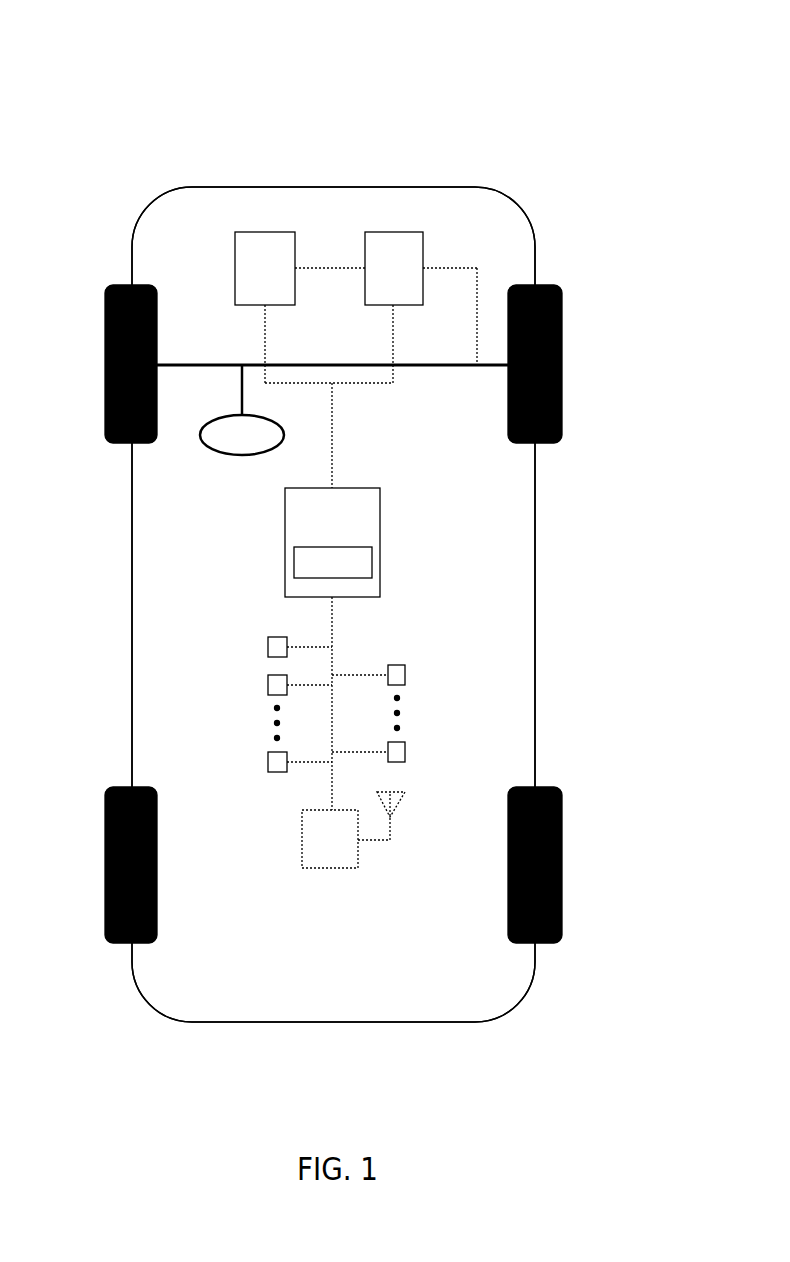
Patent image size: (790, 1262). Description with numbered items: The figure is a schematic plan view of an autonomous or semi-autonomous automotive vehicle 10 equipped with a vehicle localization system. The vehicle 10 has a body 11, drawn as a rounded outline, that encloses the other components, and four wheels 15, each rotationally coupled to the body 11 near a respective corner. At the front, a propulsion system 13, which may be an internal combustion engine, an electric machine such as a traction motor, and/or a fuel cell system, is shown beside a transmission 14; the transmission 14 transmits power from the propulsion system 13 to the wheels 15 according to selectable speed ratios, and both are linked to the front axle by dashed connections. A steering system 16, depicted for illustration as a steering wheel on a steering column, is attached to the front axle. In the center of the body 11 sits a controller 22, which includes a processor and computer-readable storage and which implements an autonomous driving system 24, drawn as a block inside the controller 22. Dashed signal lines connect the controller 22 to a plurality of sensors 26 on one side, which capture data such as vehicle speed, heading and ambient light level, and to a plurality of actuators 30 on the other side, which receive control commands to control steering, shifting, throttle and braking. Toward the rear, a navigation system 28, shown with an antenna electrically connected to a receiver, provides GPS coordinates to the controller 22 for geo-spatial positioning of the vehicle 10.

The automotive vehicle 10 is at (362, 109).
The body 11 is at (535, 608).
The propulsion system 13 is at (233, 275).
The transmission 14 is at (423, 241).
The wheels 15 is at (157, 315).
The steering system 16 is at (240, 455).
The controller 22 is at (380, 548).
The autonomous driving system 24 is at (355, 580).
The sensors 26 is at (266, 638).
The navigation system 28 is at (323, 868).
The actuators 30 is at (405, 675).